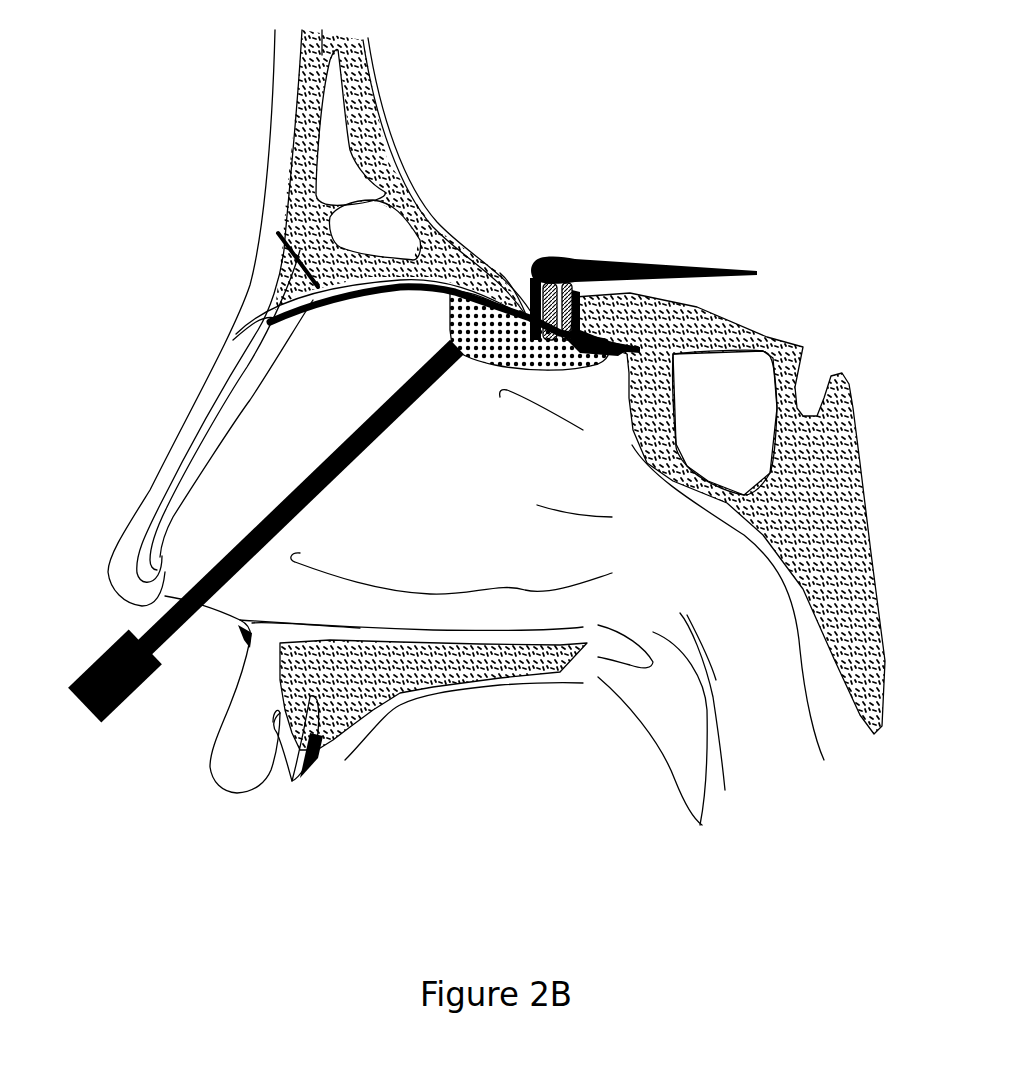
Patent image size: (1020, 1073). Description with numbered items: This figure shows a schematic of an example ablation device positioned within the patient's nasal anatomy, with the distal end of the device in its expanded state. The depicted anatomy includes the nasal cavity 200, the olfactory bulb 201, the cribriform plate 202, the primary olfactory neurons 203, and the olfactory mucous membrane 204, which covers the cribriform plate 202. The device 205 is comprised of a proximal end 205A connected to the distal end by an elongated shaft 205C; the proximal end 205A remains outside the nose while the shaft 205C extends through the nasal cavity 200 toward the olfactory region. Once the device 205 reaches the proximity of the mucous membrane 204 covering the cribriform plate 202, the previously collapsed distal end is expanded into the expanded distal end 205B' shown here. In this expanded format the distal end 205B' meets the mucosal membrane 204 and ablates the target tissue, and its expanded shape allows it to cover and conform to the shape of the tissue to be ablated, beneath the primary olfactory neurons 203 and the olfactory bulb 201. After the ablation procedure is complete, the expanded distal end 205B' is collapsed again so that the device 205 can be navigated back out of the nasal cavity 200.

The nasal cavity 200 is at (438, 500).
The olfactory bulb 201 is at (563, 260).
The cribriform plate 202 is at (518, 307).
The primary olfactory neurons 203 is at (573, 320).
The olfactory mucous membrane 204 is at (613, 353).
The device 205 is at (325, 506).
The proximal end 205A is at (100, 656).
The expanded distal end 205B' is at (468, 330).
The elongated shaft 205C is at (357, 430).